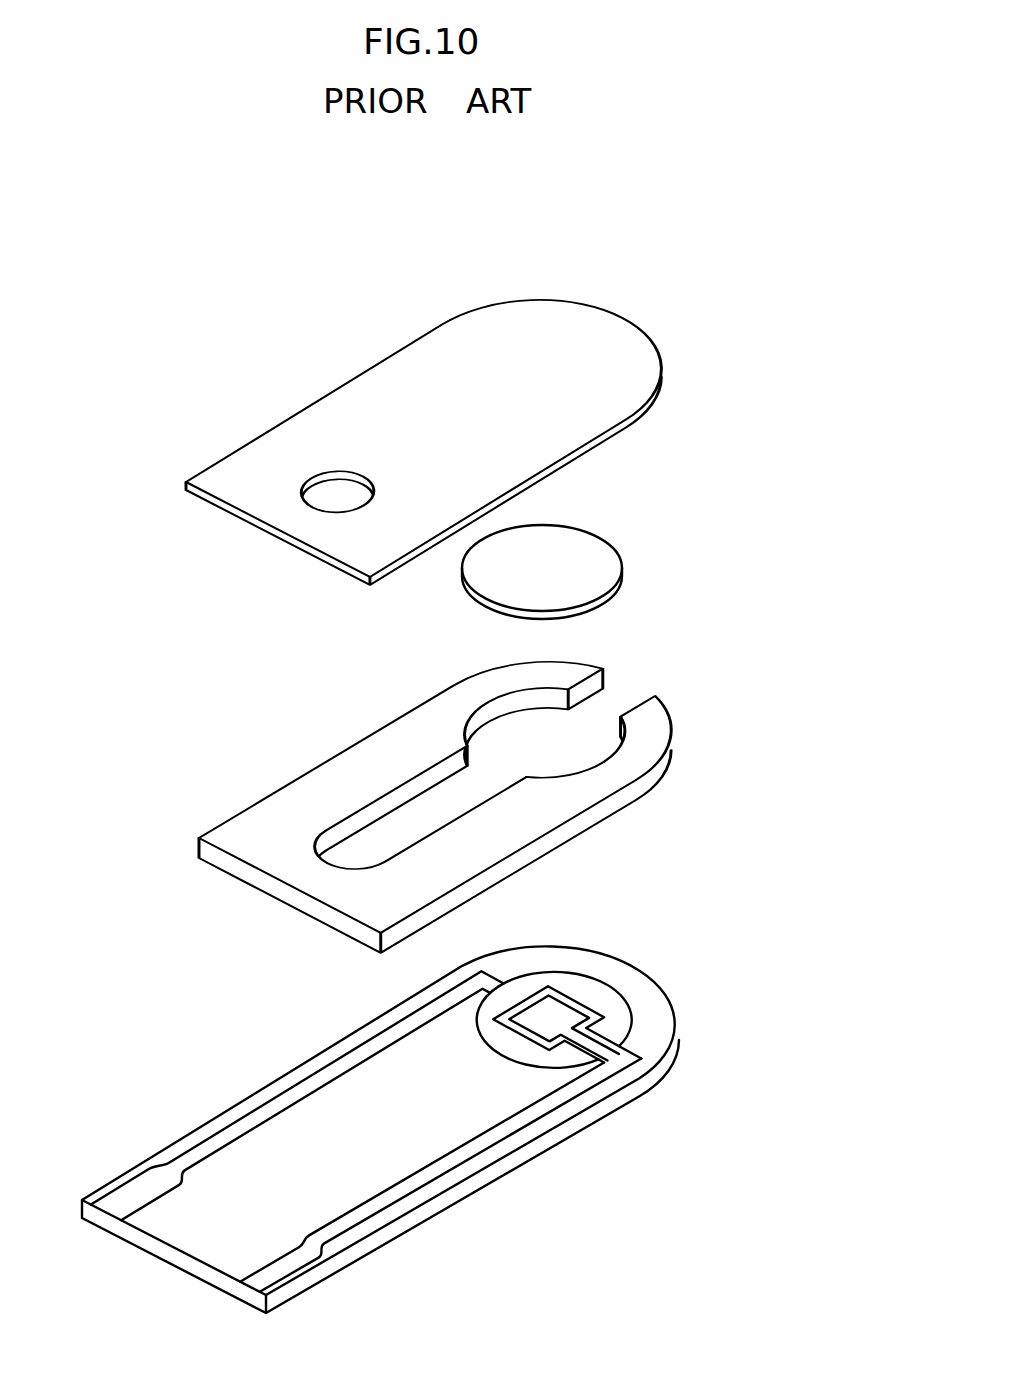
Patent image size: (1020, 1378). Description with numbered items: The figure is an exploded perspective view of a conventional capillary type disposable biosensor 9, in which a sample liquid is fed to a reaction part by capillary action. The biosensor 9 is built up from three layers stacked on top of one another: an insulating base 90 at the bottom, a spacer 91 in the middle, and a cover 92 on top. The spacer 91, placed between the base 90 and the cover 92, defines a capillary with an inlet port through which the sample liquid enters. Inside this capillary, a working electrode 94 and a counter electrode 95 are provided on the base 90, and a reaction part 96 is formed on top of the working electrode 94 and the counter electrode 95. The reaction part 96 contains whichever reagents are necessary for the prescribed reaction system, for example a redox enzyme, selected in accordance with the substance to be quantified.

The biosensor 9 is at (750, 705).
The insulating base 90 is at (660, 1032).
The spacer 91 is at (652, 752).
The cover 92 is at (610, 347).
The working electrode 94 is at (556, 1013).
The counter electrode 95 is at (613, 998).
The reaction part 96 is at (596, 562).